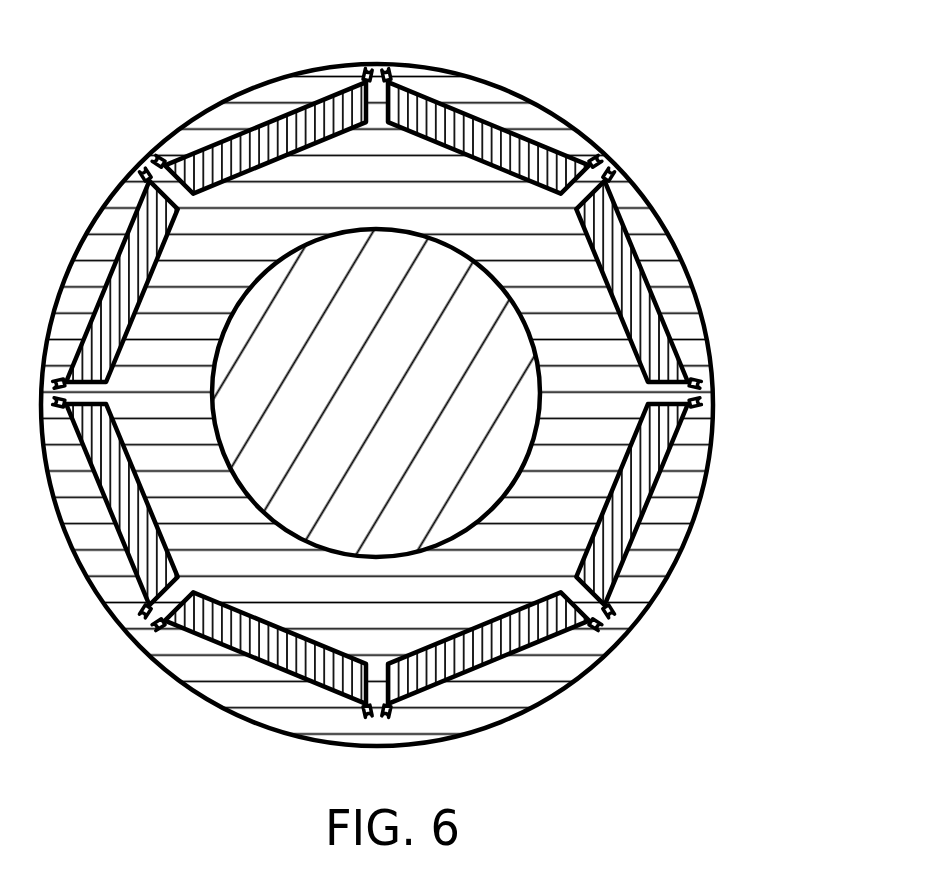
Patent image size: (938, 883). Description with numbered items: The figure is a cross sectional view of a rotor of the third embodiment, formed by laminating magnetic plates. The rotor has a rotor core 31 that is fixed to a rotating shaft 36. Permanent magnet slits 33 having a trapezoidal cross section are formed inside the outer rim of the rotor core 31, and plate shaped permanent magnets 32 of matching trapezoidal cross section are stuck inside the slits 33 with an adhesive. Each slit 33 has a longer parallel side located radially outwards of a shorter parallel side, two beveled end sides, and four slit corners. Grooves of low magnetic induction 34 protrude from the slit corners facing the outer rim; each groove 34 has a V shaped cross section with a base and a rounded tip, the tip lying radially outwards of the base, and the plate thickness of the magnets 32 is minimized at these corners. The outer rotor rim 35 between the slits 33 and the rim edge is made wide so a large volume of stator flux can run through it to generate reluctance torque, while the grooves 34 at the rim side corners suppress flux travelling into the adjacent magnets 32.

The rotor core 31 is at (192, 312).
The permanent magnet 32 is at (605, 242).
The permanent magnet slit 33 is at (253, 122).
The groove of low magnetic induction 34 is at (377, 369).
The outer rotor rim 35 is at (680, 300).
The rotating shaft 36 is at (450, 445).